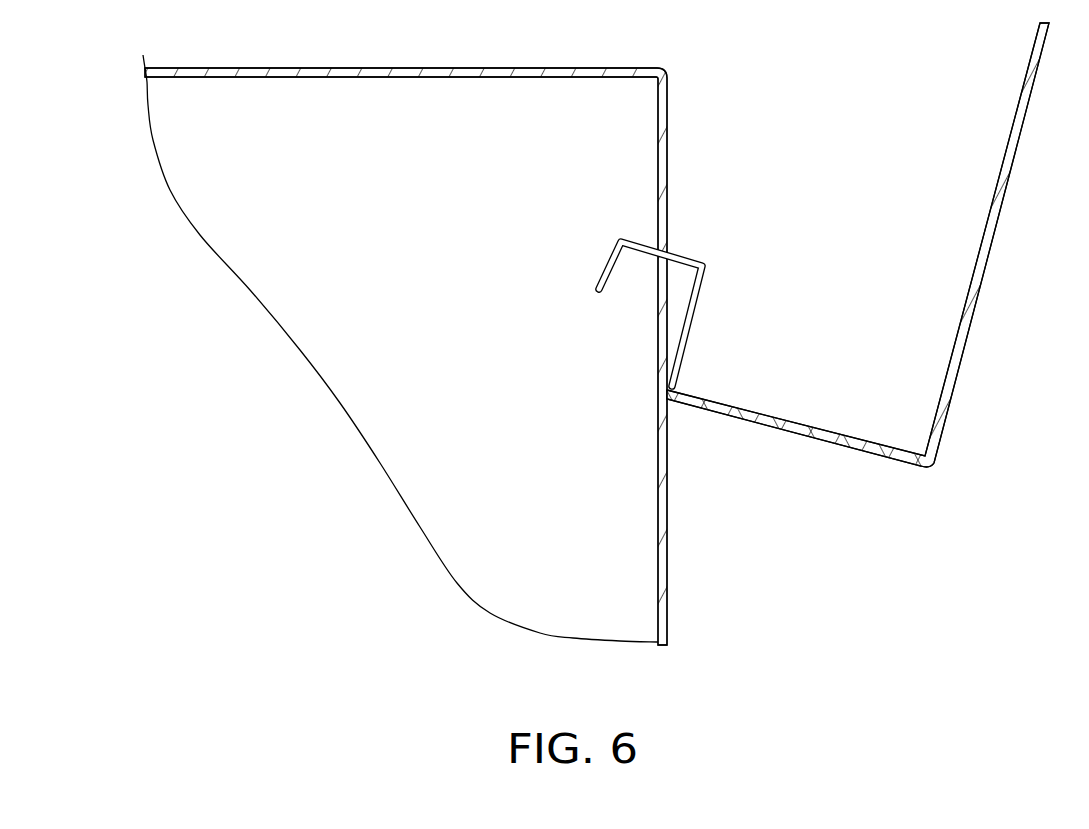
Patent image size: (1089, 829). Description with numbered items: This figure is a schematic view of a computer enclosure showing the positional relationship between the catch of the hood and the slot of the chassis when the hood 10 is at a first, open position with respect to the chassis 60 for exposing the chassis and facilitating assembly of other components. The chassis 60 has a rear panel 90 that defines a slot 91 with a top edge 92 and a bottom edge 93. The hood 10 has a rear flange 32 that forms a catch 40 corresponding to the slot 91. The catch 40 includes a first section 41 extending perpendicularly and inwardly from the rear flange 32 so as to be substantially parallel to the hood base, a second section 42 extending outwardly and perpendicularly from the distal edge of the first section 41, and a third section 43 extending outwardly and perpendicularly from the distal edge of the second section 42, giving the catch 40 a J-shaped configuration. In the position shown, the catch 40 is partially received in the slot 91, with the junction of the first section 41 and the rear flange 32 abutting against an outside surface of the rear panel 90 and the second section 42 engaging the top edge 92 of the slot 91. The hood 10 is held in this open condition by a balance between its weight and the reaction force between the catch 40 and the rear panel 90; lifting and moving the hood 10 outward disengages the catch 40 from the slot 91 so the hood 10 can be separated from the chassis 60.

The hood 10 is at (975, 295).
The rear flange 32 is at (862, 450).
The catch 40 is at (652, 280).
The first section 41 is at (700, 300).
The second section 42 is at (649, 247).
The third section 43 is at (610, 265).
The chassis 60 is at (667, 469).
The rear panel 90 is at (660, 416).
The slot 91 is at (660, 299).
The top edge 92 is at (662, 251).
The bottom edge 93 is at (659, 318).